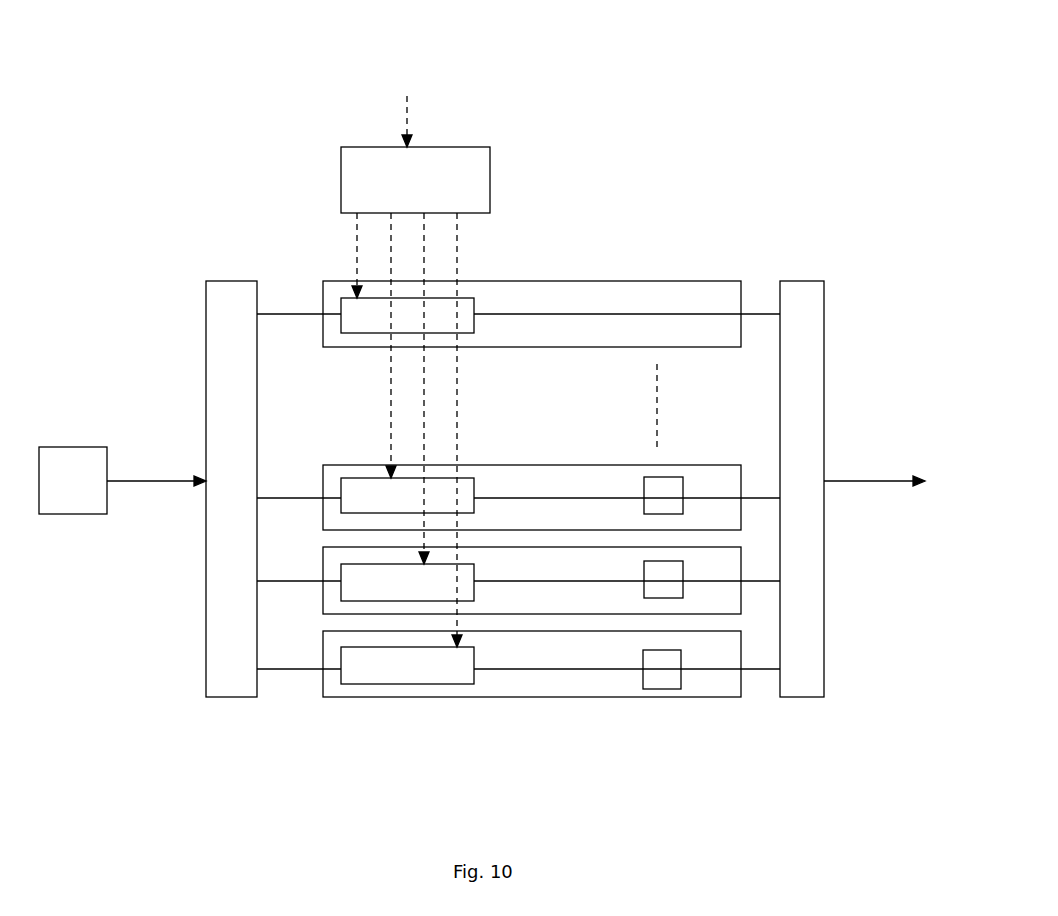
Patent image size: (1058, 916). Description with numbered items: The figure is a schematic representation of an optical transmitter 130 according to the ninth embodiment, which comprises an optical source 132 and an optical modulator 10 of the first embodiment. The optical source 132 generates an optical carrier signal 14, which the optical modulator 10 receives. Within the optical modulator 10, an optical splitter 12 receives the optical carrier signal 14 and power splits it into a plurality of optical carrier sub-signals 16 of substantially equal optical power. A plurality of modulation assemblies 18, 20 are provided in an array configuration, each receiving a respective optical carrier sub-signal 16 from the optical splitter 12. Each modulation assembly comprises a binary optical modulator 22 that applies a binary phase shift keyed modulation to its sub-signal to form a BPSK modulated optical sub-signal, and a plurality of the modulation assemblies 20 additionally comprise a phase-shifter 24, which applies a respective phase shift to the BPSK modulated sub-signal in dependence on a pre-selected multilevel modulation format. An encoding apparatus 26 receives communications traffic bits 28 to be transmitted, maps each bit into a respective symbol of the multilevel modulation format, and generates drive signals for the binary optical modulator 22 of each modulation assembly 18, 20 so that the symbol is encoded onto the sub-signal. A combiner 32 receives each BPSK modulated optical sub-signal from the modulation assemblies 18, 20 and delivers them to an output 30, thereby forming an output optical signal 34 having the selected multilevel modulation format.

The optical transmitter 130 is at (740, 62).
The optical modulator 10 is at (673, 180).
The optical splitter 12 is at (223, 685).
The optical carrier signal 14 is at (156, 479).
The optical carrier sub-signals 16 is at (273, 672).
The modulation assembly 18 is at (675, 297).
The modulation assembly 20 is at (625, 482).
The binary optical modulator 22 is at (457, 313).
The phase-shifter 24 is at (657, 498).
The encoding apparatus 26 is at (355, 183).
The communications traffic bits 28 is at (407, 113).
The output 30 is at (848, 508).
The combiner 32 is at (807, 297).
The output optical signal 34 is at (892, 480).
The optical source 132 is at (89, 465).